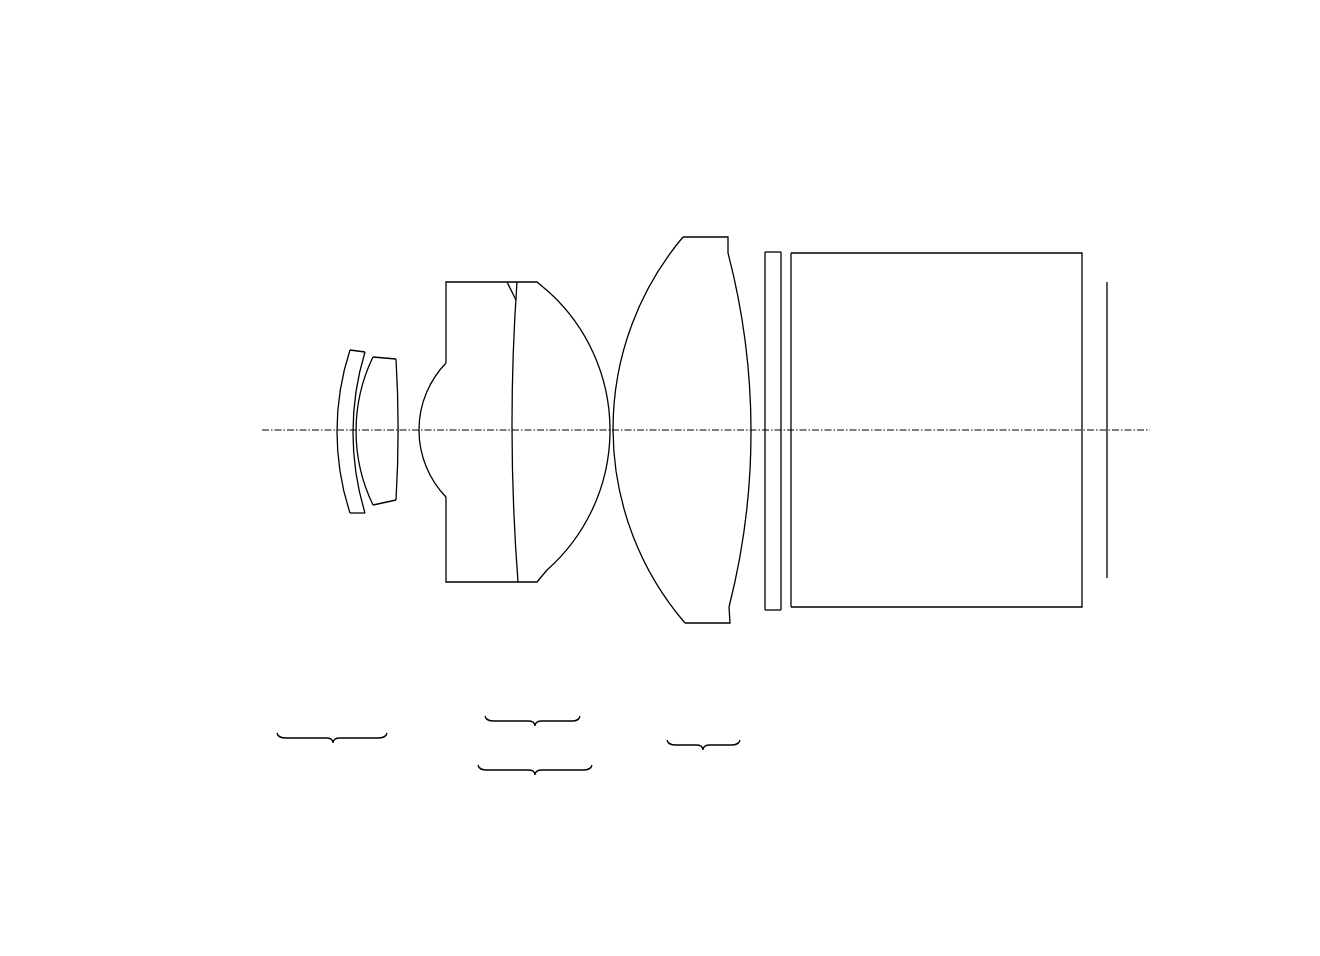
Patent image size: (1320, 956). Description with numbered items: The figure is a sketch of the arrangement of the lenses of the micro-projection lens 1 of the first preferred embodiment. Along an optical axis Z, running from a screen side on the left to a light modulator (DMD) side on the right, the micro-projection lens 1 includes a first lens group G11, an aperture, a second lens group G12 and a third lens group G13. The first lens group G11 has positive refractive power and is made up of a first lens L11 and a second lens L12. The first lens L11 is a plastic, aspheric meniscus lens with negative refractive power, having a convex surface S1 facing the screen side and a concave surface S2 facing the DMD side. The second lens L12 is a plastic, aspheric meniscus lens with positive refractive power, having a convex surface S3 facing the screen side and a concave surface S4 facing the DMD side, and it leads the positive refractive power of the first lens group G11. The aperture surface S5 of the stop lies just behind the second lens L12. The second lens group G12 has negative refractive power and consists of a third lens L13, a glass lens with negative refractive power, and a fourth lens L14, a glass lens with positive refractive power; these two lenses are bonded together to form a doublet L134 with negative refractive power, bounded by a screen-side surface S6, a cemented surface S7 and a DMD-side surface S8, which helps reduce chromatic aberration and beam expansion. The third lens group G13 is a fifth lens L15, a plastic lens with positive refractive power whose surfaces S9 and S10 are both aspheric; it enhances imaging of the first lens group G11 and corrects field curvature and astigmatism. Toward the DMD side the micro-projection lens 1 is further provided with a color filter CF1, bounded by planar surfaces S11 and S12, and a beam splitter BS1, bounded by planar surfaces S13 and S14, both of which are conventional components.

The micro-projection lens 1 is at (1243, 166).
The optical axis Z is at (300, 432).
The first lens group G11 is at (363, 423).
The second lens group G12 is at (514, 474).
The third lens group G13 is at (682, 458).
The first lens L11 is at (315, 467).
The second lens L12 is at (373, 446).
The third lens L13 is at (469, 426).
The fourth lens L14 is at (563, 427).
The doublet L134 is at (514, 453).
The fifth lens L15 is at (682, 431).
The convex surface S1 is at (340, 381).
The concave surface S2 is at (363, 351).
The convex surface S3 is at (373, 357).
The concave surface S4 is at (394, 358).
The aperture surface S5 is at (398, 400).
The screen-side surface of doublet S6 is at (445, 363).
The bonding surface of doublet S7 is at (515, 282).
The DMD-side surface of doublet S8 is at (569, 305).
The screen-side surface of fifth lens S9 is at (660, 263).
The DMD-side surface of fifth lens S10 is at (728, 252).
The screen-side surface of color filter S11 is at (765, 300).
The DMD-side surface of color filter S12 is at (782, 299).
The screen-side surface of beam splitter S13 is at (791, 275).
The DMD-side surface of beam splitter S14 is at (1082, 271).
The color filter CF1 is at (824, 433).
The beam splitter BS1 is at (936, 375).